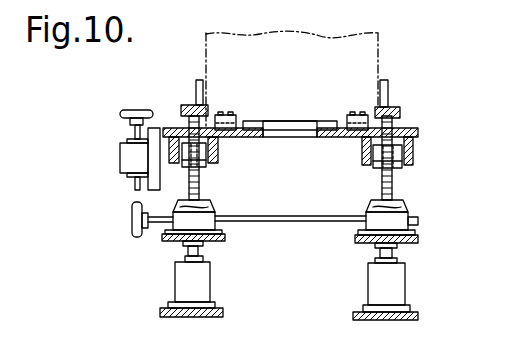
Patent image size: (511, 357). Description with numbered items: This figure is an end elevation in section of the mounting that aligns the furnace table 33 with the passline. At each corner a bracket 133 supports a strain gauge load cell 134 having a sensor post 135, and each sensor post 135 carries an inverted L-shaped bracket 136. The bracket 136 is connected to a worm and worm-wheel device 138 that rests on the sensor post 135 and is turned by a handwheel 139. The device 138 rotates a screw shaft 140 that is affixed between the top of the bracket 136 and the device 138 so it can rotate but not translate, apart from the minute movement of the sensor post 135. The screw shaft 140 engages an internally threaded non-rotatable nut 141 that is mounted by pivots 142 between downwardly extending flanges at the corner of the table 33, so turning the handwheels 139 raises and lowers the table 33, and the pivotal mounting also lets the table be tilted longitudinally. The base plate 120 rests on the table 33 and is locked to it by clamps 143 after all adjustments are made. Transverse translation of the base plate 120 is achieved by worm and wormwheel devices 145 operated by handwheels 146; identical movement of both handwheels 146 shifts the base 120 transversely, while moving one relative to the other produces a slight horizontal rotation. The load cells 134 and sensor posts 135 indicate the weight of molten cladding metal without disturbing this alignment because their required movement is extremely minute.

The table 33 is at (418, 135).
The base plate 120 is at (400, 121).
The bracket 133 is at (212, 317).
The strain gauge load cell 134 is at (205, 280).
The sensor post 135 is at (188, 250).
The inverted L-shaped bracket 136 is at (183, 105).
The worm and worm-wheel device 138 is at (203, 219).
The handwheel 139 is at (132, 219).
The screw shaft 140 is at (200, 184).
The nut 141 is at (206, 166).
The pivot 142 is at (218, 152).
The clamp 143 is at (345, 117).
The worm and wormwheel device 145 is at (122, 160).
The handwheel 146 is at (120, 113).